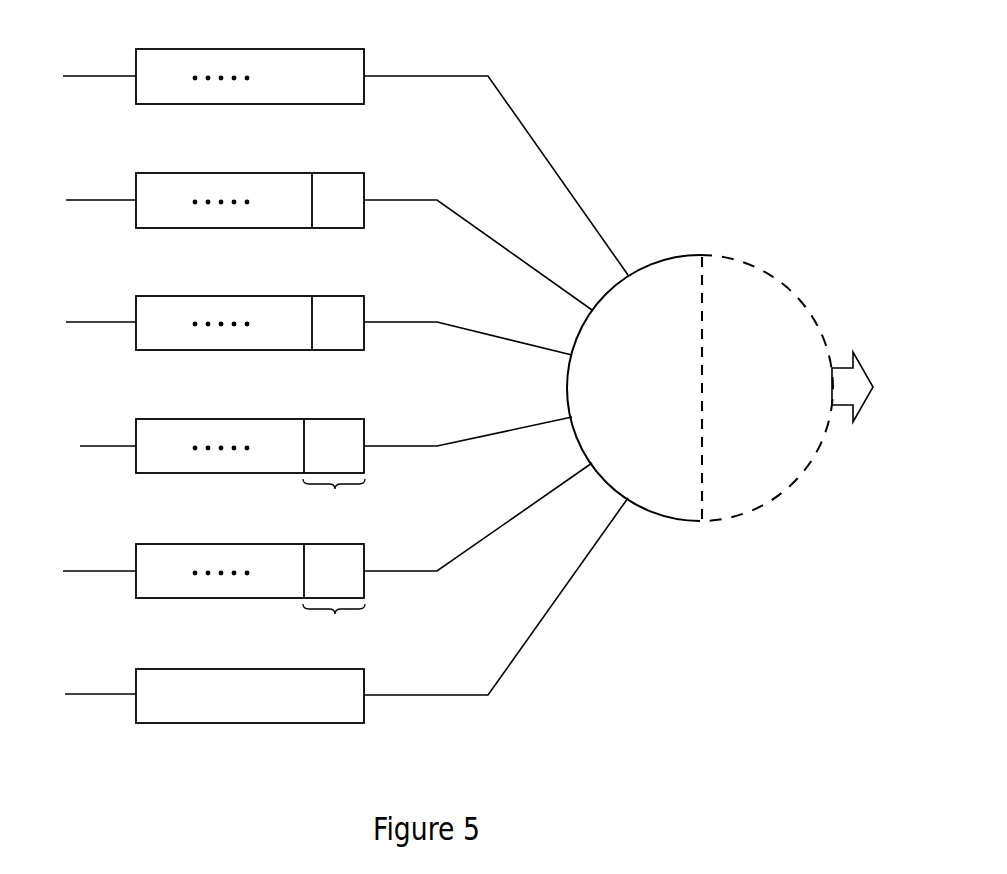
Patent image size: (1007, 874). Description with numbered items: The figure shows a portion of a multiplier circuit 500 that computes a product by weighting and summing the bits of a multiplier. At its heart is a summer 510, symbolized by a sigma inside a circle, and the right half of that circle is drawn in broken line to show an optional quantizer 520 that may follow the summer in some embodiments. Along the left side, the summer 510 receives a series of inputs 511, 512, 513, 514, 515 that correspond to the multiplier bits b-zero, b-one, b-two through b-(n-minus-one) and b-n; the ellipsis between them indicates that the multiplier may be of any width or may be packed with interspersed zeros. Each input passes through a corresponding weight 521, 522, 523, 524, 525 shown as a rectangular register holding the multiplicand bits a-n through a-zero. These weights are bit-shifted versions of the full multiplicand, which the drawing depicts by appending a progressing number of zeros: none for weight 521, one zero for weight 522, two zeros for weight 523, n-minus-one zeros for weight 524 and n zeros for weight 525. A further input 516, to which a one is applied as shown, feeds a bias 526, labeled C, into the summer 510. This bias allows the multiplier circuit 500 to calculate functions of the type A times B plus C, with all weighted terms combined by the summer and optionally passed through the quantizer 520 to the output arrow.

The multiplier circuit 500 is at (829, 73).
The summer 510 is at (672, 441).
The quantizer 520 is at (765, 441).
The input 511 is at (113, 75).
The input 512 is at (113, 199).
The input 513 is at (113, 321).
The input 514 is at (113, 445).
The input 515 is at (113, 570).
The further input 516 is at (113, 694).
The weight 521 is at (220, 49).
The weight 522 is at (220, 173).
The weight 523 is at (220, 296).
The weight 524 is at (220, 419).
The weight 525 is at (220, 544).
The bias 526 is at (220, 669).